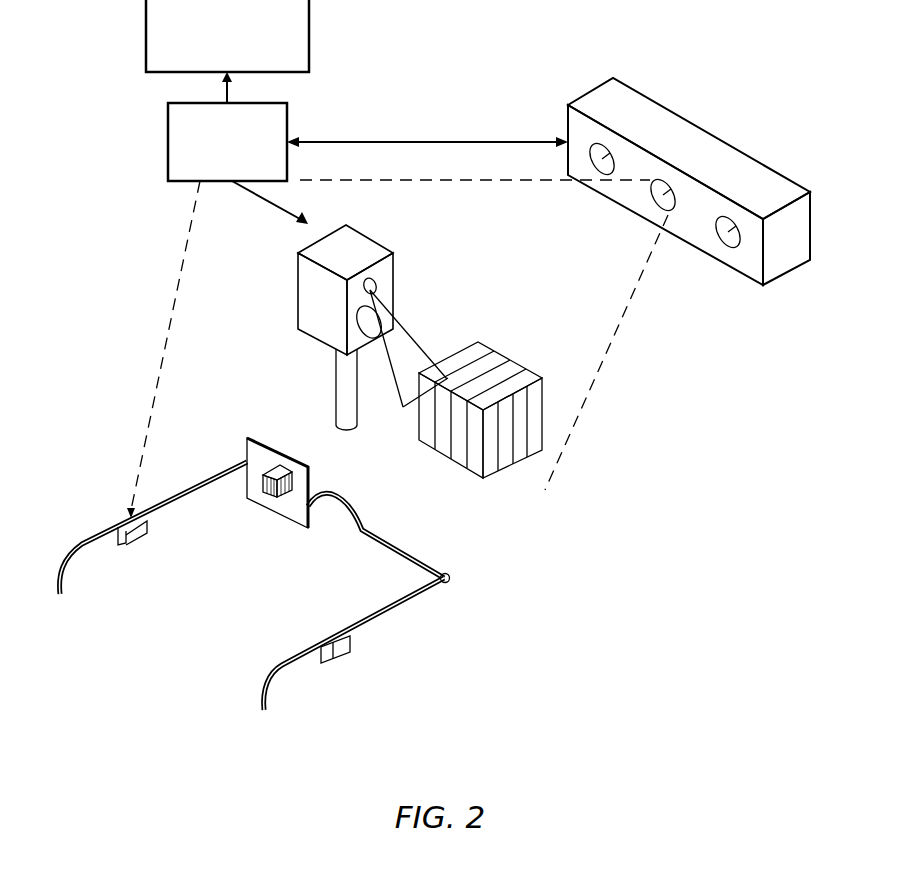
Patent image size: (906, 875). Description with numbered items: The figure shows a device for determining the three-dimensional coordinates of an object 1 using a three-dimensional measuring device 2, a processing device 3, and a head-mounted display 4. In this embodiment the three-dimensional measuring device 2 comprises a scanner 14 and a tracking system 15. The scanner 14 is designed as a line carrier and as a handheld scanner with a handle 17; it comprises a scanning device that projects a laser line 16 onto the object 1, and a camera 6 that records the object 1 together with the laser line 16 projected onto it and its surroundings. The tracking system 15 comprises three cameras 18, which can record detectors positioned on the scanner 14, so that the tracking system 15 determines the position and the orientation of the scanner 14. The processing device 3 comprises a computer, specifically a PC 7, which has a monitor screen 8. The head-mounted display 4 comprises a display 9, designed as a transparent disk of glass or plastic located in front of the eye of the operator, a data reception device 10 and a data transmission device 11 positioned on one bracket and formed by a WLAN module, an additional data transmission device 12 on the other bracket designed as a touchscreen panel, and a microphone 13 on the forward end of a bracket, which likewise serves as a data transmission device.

The object 1 is at (467, 450).
The 3D measuring device 2 is at (658, 167).
The processing device 3 is at (350, 74).
The head-mounted display 4 is at (273, 584).
The camera 6 is at (380, 338).
The PC 7 is at (287, 122).
The monitor screen 8 is at (309, 35).
The display 9 is at (298, 518).
The data reception device 10 is at (128, 548).
The data transmission device 11 is at (140, 531).
The additional data transmission device 12 is at (335, 662).
The microphone 13 is at (450, 586).
The scanner 14 is at (374, 359).
The tracking system 15 is at (675, 92).
The laser line 16 is at (432, 345).
The handle 17 is at (343, 392).
The cameras 18 is at (592, 165).